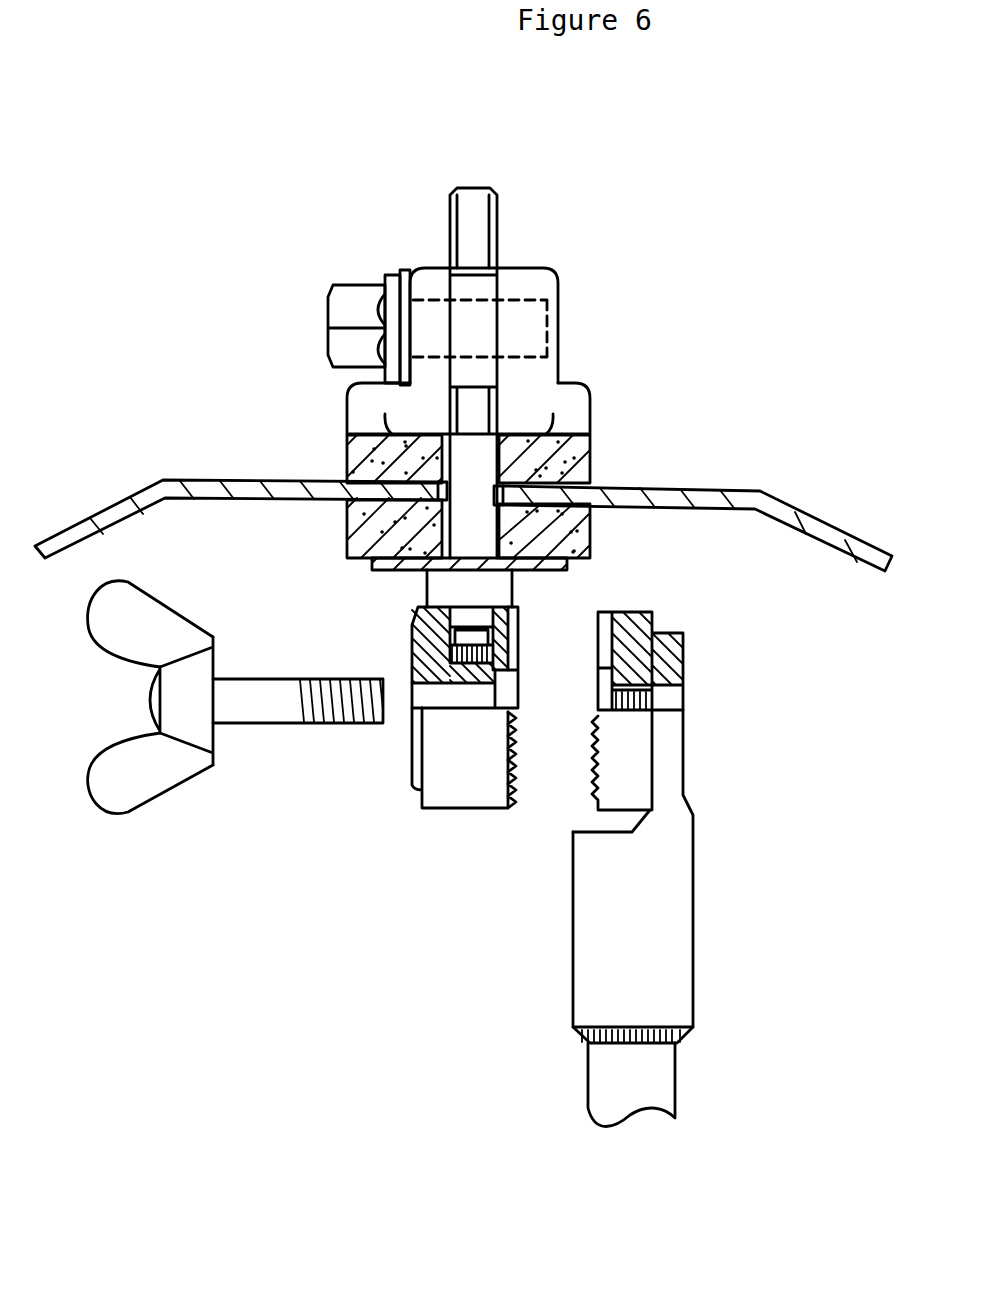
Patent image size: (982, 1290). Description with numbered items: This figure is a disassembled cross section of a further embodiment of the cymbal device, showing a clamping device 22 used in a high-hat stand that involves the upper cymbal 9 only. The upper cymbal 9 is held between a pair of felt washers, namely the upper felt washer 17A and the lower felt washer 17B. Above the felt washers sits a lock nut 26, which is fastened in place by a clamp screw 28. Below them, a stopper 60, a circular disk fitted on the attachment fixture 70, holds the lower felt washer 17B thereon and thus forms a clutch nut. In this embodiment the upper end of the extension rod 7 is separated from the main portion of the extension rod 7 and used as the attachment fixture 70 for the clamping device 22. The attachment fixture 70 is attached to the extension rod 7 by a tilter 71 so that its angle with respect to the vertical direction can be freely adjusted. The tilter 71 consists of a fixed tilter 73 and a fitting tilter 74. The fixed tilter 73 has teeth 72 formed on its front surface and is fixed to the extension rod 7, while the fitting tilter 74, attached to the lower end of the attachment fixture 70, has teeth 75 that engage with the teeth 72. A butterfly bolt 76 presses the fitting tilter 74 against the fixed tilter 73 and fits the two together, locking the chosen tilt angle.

The clamping device 22 is at (790, 309).
The attachment fixture 70 is at (498, 218).
The lock nut 26 is at (572, 288).
The clamp screw 28 is at (340, 300).
The upper felt washer 17A is at (592, 455).
The lower felt washer 17B is at (347, 533).
The upper cymbal 9 is at (820, 517).
The stopper 60 is at (553, 568).
The tilter 71 is at (446, 838).
The fitting tilter 74 is at (437, 789).
The teeth 75 is at (517, 756).
The fixed tilter 73 is at (640, 745).
The teeth 72 is at (595, 789).
The extension rod 7 is at (693, 960).
The butterfly bolt 76 is at (152, 788).